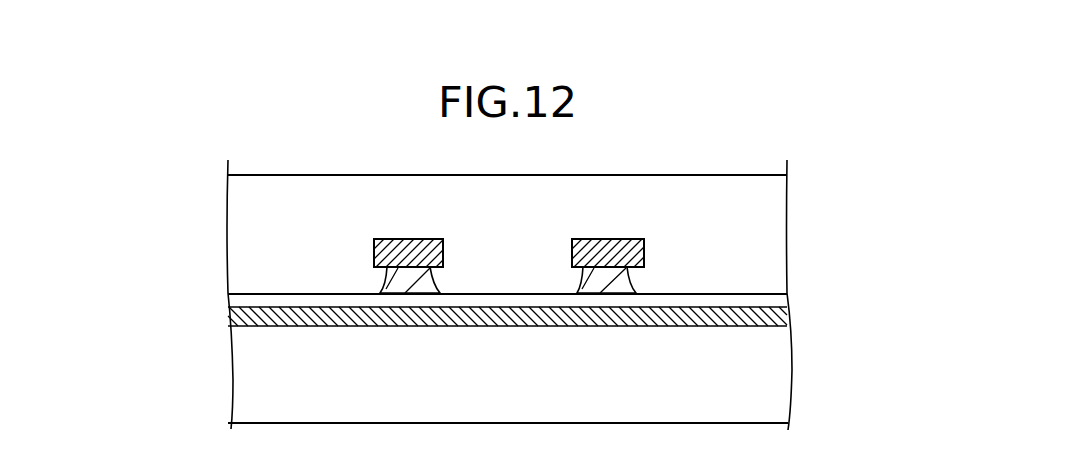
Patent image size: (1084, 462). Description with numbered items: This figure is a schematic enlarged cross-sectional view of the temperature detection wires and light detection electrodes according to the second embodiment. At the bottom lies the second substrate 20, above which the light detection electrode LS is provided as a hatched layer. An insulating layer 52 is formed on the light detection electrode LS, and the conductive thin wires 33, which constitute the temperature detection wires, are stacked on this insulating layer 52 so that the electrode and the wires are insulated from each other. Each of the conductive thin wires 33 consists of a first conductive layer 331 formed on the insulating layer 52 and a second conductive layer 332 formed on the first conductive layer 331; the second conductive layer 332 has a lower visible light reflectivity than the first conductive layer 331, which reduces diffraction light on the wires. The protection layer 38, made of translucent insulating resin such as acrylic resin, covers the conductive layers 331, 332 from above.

The protection layer 38 is at (774, 193).
The conductive thin wires 33 is at (155, 196).
The second conductive layer 332 is at (386, 251).
The first conductive layer 331 is at (390, 282).
The insulating layer 52 is at (774, 300).
The light detection electrode LS is at (777, 316).
The second substrate 20 is at (775, 378).